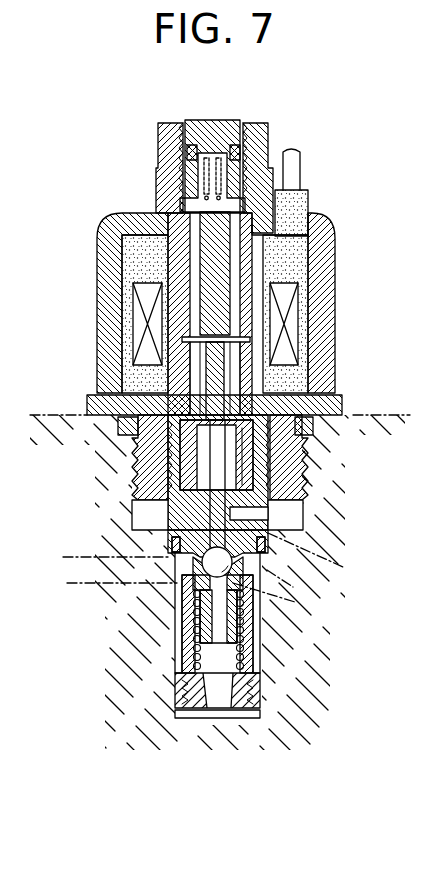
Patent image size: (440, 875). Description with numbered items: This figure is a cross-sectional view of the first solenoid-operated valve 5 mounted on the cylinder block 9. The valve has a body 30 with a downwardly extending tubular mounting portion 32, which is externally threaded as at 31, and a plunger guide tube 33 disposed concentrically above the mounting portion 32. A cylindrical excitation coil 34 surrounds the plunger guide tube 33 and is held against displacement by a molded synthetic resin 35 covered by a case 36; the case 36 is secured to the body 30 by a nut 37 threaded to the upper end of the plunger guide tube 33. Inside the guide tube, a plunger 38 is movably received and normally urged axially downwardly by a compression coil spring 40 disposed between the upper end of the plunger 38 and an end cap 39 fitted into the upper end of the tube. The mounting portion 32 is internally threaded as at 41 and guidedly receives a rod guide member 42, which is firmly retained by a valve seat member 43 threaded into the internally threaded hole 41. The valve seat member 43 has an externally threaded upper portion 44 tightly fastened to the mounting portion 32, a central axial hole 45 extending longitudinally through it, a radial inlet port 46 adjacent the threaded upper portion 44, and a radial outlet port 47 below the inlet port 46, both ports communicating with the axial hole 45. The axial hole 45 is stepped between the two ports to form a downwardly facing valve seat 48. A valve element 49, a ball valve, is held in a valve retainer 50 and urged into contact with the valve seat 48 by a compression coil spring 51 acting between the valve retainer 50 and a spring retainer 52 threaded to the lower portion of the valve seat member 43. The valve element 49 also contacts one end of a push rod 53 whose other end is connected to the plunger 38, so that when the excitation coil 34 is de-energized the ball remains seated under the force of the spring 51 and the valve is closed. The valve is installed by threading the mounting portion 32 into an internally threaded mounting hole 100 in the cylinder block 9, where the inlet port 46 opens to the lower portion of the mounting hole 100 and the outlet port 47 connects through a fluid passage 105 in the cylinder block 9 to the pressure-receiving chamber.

The first solenoid-operated valve 5 is at (318, 148).
The cylinder block 9 is at (50, 414).
The body 30 is at (328, 404).
The external thread 31 is at (300, 450).
The tubular mounting portion 32 is at (270, 472).
The plunger guide tube 33 is at (266, 250).
The cylindrical excitation coil 34 is at (133, 312).
The molded synthetic resin 35 is at (130, 250).
The case 36 is at (113, 218).
The nut 37 is at (157, 151).
The plunger 38 is at (226, 291).
The end cap 39 is at (234, 119).
The compression coil spring 40 is at (211, 157).
The internally threaded hole 41 is at (148, 440).
The rod guide member 42 is at (170, 375).
The valve seat member 43 is at (165, 513).
The externally threaded upper portion 44 is at (290, 512).
The central axial hole 45 is at (283, 535).
The radial inlet port 46 is at (258, 513).
The radial outlet port 47 is at (180, 570).
The valve seat 48 is at (260, 597).
The valve element 49 is at (192, 589).
The valve retainer 50 is at (250, 601).
The compression coil spring 51 is at (243, 655).
The bottom plug 52 is at (238, 712).
The push rod 53 is at (205, 462).
The internally threaded mounting hole 100 is at (300, 545).
The fluid passage 105 is at (85, 582).